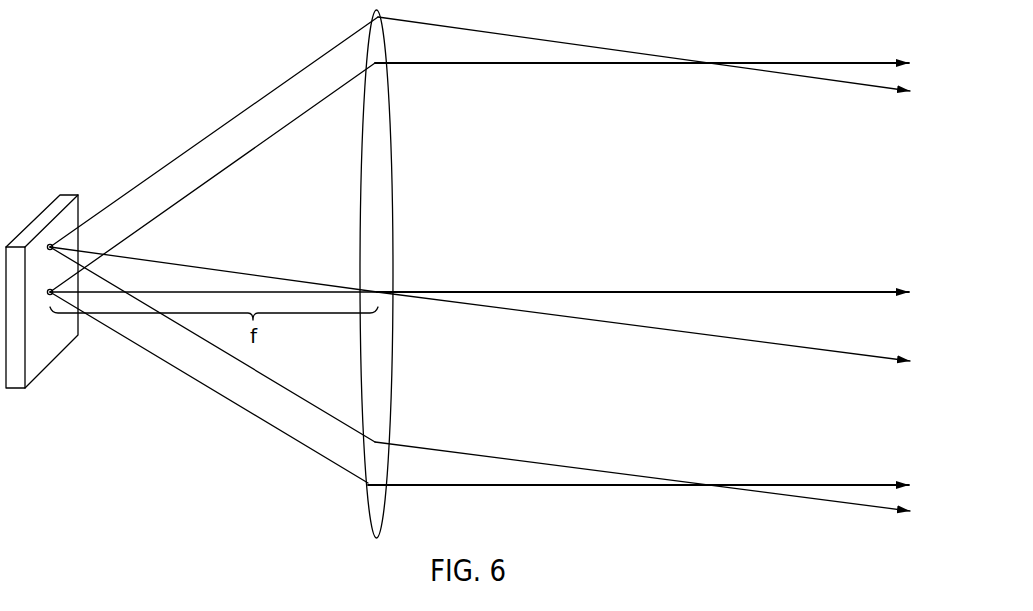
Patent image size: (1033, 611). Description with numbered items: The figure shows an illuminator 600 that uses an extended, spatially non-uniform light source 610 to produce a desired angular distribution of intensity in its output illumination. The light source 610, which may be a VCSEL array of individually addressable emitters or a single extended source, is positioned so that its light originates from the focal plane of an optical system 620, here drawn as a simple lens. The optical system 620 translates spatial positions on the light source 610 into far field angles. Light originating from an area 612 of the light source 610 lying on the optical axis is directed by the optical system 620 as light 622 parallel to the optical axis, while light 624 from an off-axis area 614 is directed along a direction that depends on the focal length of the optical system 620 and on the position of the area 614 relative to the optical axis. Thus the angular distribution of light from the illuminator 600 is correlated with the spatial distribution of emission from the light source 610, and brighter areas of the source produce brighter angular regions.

The illuminator 600 is at (146, 60).
The light source 610 is at (33, 382).
The area 612 is at (80, 291).
The off-axis area 614 is at (78, 246).
The optical system 620 is at (375, 205).
The light 622 is at (852, 63).
The light 624 is at (833, 80).